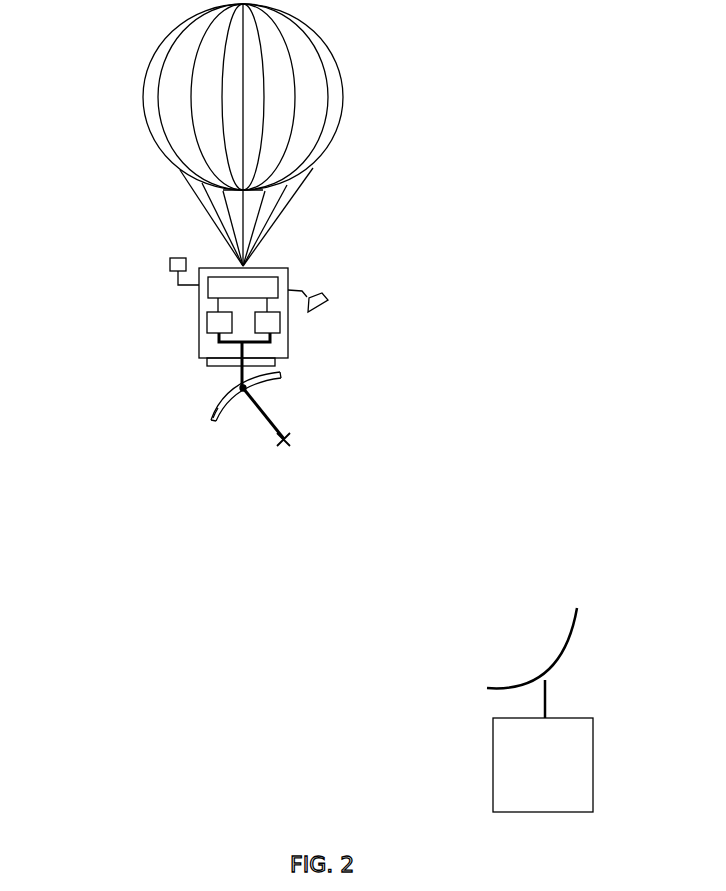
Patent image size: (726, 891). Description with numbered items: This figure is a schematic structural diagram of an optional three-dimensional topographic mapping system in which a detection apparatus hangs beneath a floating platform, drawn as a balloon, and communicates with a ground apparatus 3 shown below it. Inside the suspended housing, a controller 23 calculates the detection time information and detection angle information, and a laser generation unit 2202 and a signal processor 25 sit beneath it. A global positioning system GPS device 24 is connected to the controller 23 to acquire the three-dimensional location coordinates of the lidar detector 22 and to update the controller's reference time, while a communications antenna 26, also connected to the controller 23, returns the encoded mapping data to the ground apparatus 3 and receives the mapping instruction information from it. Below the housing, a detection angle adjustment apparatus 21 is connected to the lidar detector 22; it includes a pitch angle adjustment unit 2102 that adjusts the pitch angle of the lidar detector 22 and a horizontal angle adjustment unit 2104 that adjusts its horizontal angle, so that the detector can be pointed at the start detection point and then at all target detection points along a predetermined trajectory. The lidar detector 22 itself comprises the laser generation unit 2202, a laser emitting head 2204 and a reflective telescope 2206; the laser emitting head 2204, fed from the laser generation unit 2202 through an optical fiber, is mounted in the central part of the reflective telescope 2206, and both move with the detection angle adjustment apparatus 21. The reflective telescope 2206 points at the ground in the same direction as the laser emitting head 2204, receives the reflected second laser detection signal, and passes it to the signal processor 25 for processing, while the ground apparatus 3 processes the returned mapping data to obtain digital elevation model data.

The ground apparatus 3 is at (500, 745).
The detection angle adjustment apparatus 21 is at (237, 379).
The lidar detector 22 is at (250, 386).
The controller 23 is at (267, 284).
The global positioning system GPS device 24 is at (172, 259).
The signal processor 25 is at (272, 326).
The communications antenna 26 is at (312, 306).
The pitch angle adjustment unit 2102 is at (241, 388).
The horizontal angle adjustment unit 2104 is at (216, 362).
The laser generation unit 2202 is at (218, 322).
The laser emitting head 2204 is at (284, 442).
The reflective telescope 2206 is at (220, 413).